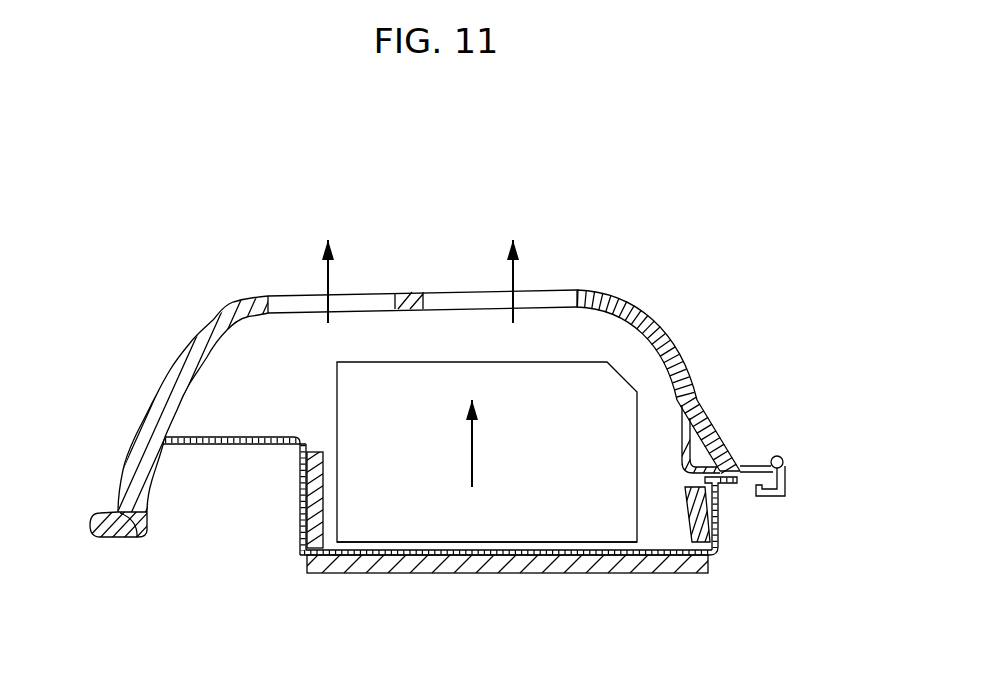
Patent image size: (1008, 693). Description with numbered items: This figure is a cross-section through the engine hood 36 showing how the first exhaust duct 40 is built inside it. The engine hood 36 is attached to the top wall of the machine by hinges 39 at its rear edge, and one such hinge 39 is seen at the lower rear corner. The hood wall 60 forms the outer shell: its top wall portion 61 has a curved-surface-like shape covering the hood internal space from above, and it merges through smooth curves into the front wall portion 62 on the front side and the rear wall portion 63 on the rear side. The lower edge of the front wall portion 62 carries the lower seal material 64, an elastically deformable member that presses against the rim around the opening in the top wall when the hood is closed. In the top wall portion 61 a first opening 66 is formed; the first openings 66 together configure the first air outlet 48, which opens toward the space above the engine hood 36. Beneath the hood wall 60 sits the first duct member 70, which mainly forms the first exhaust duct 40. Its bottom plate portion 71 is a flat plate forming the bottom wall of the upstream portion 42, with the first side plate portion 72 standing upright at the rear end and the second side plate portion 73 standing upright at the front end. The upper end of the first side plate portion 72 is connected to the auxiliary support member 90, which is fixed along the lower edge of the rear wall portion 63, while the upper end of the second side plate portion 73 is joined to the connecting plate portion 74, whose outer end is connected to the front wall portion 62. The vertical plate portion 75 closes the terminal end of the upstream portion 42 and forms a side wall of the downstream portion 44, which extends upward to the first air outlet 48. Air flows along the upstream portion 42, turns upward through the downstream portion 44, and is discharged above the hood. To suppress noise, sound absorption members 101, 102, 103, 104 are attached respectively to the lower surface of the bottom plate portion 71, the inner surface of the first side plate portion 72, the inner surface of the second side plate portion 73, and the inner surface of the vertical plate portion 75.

The engine hood 36 is at (641, 207).
The hinge 39 is at (784, 459).
The first exhaust duct 40 is at (292, 596).
The upstream portion 42 is at (651, 520).
The downstream portion 44 is at (594, 345).
The first air outlet 48 is at (470, 281).
The hood wall 60 is at (621, 295).
The top wall portion 61 is at (264, 294).
The front wall portion 62 is at (160, 395).
The rear wall portion 63 is at (694, 380).
The lower seal material 64 is at (103, 540).
The first opening 66 is at (380, 292).
The first duct member 70 is at (723, 551).
The bottom plate portion 71 is at (473, 557).
The first side plate portion 72 is at (719, 520).
The second side plate portion 73 is at (298, 508).
The connecting plate portion 74 is at (207, 445).
The vertical plate portion 75 is at (226, 370).
The auxiliary support member 90 is at (690, 436).
The sound absorption member 101 is at (395, 574).
The sound absorption member 102 is at (688, 532).
The sound absorption member 103 is at (316, 443).
The sound absorption member 104 is at (563, 525).